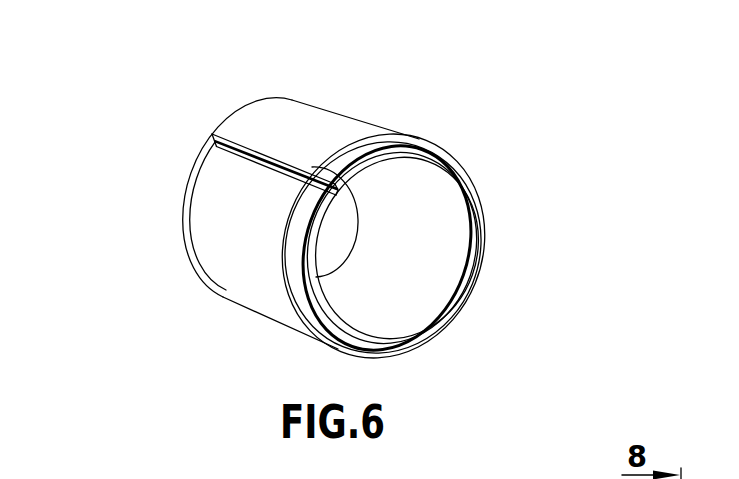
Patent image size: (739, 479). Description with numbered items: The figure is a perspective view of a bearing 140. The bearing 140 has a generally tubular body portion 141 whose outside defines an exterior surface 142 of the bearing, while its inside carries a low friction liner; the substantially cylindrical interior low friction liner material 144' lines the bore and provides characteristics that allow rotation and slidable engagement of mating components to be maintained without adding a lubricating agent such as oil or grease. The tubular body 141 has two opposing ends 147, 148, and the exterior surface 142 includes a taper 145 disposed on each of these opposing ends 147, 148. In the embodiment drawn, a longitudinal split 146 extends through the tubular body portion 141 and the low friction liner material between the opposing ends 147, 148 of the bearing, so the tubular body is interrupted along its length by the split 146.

The bearing 140 is at (433, 109).
The tubular body portion 141 is at (313, 113).
The exterior surface 142 is at (247, 268).
The interior low friction liner material 144' is at (434, 248).
The taper 145 is at (195, 203).
The longitudinal split 146 is at (266, 153).
The opposing end 147 is at (172, 155).
The opposing end 148 is at (458, 341).